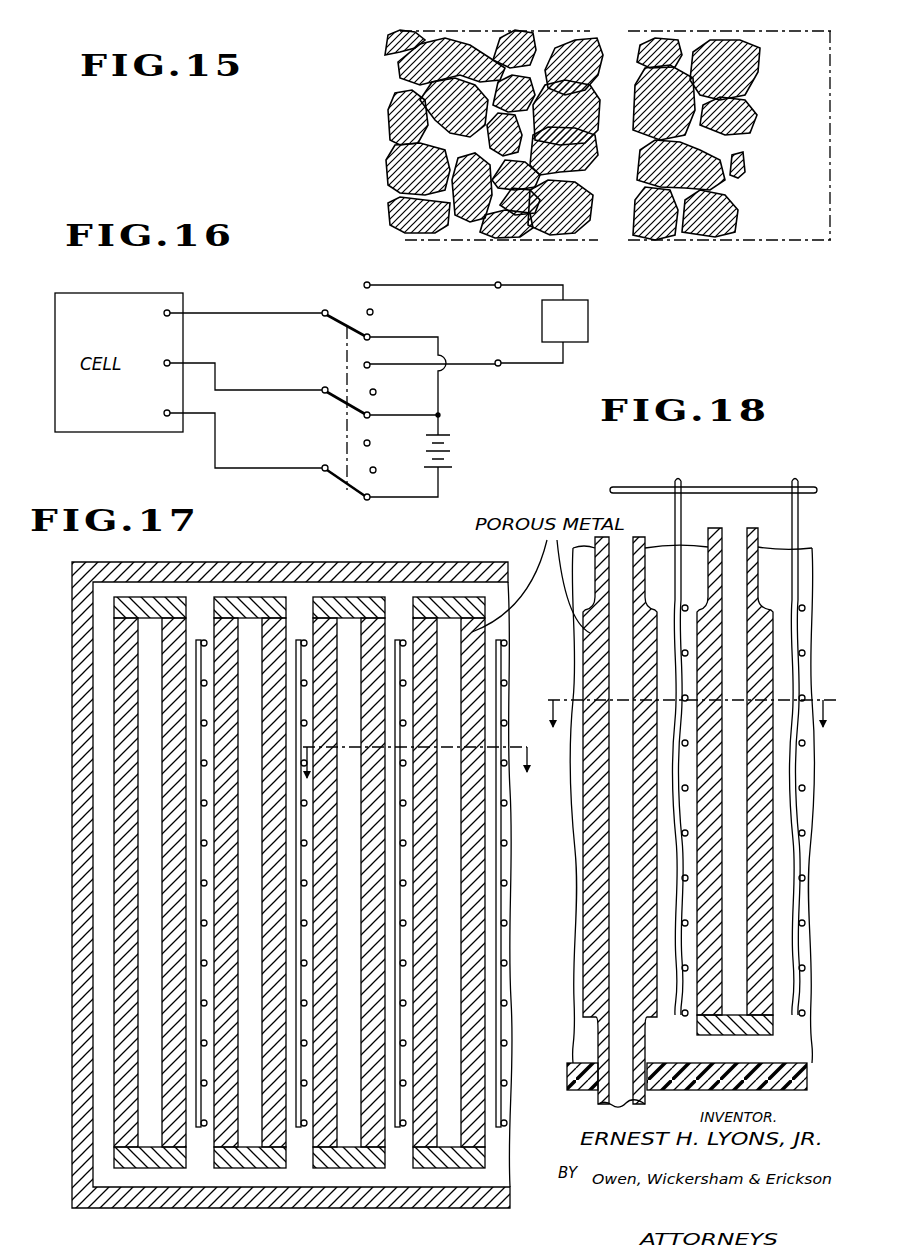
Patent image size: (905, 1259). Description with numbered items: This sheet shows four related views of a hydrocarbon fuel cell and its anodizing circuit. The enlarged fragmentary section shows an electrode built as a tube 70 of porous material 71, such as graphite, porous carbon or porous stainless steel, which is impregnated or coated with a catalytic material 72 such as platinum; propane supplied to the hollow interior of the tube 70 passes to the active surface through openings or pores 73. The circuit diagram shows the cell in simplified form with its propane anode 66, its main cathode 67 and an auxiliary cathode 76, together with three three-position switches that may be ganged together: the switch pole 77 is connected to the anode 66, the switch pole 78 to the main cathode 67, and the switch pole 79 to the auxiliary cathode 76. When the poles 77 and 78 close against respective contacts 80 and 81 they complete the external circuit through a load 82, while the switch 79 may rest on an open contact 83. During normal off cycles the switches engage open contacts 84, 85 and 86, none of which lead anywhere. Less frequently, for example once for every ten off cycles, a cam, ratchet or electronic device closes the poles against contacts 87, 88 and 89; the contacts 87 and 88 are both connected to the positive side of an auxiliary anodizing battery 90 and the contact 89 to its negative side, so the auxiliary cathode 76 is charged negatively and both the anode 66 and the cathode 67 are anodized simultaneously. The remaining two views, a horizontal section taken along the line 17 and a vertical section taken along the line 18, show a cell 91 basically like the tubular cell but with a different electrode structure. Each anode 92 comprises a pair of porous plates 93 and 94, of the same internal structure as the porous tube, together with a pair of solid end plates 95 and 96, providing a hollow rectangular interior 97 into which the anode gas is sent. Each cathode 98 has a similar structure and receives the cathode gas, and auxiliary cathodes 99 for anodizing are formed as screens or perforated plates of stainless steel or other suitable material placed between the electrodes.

In FIG. 17, the section line 17— 17 is at (550, 749).
In FIG. 18, the section line 17— 17 is at (693, 730).
In FIG. 17, the section line 18— 18 is at (412, 774).
In FIG. 16, the propane anode 66 is at (170, 311).
In FIG. 16, the cathode 67 is at (170, 361).
In FIG. 15, the tube 70 is at (596, 239).
In FIG. 15, the porous material 71 is at (479, 231).
In FIG. 17, the porous material 71 is at (125, 940).
In FIG. 18, the porous material 71 is at (586, 875).
In FIG. 15, the catalytic material 72 is at (386, 46).
In FIG. 15, the pores 73 is at (408, 94).
In FIG. 16, the auxiliary cathode 76 is at (170, 412).
In FIG. 16, the switch pole 77 is at (337, 325).
In FIG. 16, the switch pole 78 is at (334, 398).
In FIG. 16, the switch pole 79 is at (340, 479).
In FIG. 16, the contact 80 is at (371, 283).
In FIG. 16, the contact 81 is at (370, 363).
In FIG. 16, the load 82 is at (543, 318).
In FIG. 16, the open contact 83 is at (370, 443).
In FIG. 16, the open contact 84 is at (373, 311).
In FIG. 16, the open contact 85 is at (376, 394).
In FIG. 16, the open contact 86 is at (376, 470).
In FIG. 16, the contact 87 is at (370, 335).
In FIG. 16, the contact 88 is at (365, 417).
In FIG. 16, the contact 89 is at (370, 500).
In FIG. 16, the auxiliary anodizing battery 90 is at (452, 453).
In FIG. 17, the cell 91 is at (82, 1126).
In FIG. 18, the cell 91 is at (687, 1076).
In FIG. 17, the anode 92 is at (289, 927).
In FIG. 18, the anode 92 is at (694, 817).
In FIG. 17, the porous plate 93 is at (128, 1000).
In FIG. 17, the porous plate 94 is at (382, 966).
In FIG. 17, the solid end plate 95 is at (148, 1163).
In FIG. 18, the solid end plate 95 is at (735, 1025).
In FIG. 17, the solid end plate 96 is at (142, 600).
In FIG. 17, the hollow rectangular interior 97 is at (145, 810).
In FIG. 17, the cathode 98 is at (253, 1137).
In FIG. 17, the auxiliary cathode 99 is at (196, 640).
In FIG. 18, the auxiliary cathode 99 is at (738, 748).